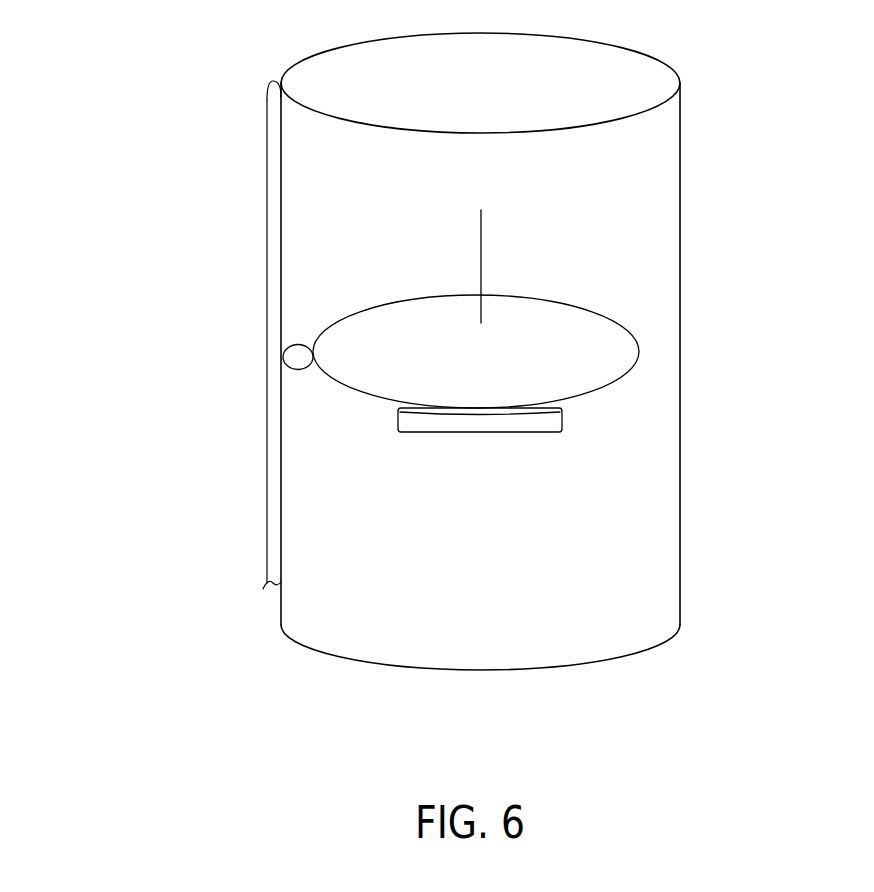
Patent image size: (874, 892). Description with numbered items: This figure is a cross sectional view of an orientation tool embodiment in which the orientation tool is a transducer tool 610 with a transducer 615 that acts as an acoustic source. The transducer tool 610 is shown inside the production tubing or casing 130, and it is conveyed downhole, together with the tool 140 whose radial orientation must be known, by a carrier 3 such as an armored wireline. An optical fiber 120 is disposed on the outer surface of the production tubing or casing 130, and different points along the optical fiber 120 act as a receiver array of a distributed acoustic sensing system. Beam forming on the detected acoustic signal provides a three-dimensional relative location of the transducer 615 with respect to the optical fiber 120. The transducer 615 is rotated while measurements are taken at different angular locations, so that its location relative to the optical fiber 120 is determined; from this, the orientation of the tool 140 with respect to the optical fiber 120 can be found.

The carrier 3 is at (481, 252).
The optical fiber 120 is at (267, 375).
The production tubing or casing 130 is at (687, 464).
The tool 140 is at (459, 438).
The transducer tool 610 is at (545, 345).
The transducer 615 is at (304, 345).